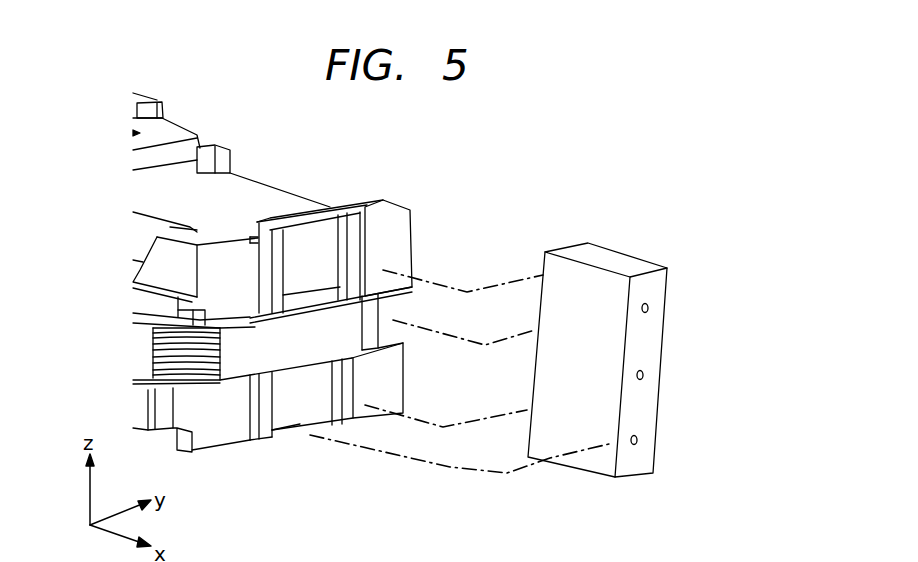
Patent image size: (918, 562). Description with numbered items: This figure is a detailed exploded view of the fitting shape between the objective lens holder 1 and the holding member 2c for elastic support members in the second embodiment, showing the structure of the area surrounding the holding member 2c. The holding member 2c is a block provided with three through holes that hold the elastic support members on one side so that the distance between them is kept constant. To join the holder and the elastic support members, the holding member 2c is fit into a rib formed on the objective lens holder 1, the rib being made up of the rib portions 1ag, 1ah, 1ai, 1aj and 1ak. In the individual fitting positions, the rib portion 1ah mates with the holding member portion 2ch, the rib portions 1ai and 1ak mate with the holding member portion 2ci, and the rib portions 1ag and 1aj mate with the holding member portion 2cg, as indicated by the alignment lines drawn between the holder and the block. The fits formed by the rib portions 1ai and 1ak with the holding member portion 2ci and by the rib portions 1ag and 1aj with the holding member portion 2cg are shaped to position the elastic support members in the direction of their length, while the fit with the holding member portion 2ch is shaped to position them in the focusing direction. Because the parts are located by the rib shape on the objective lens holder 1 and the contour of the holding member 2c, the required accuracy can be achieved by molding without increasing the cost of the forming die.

The objective lens holder 1 is at (233, 187).
The rib portion 1ag is at (368, 240).
The rib portion 1ah is at (325, 204).
The rib portion 1ai is at (283, 270).
The rib portion 1aj is at (353, 383).
The rib portion 1ak is at (268, 440).
The holding member for elastic support members 2c is at (588, 334).
The holding member portion 2ch is at (597, 260).
The holding member portion 2ci is at (633, 292).
The holding member portion 2cg is at (535, 377).